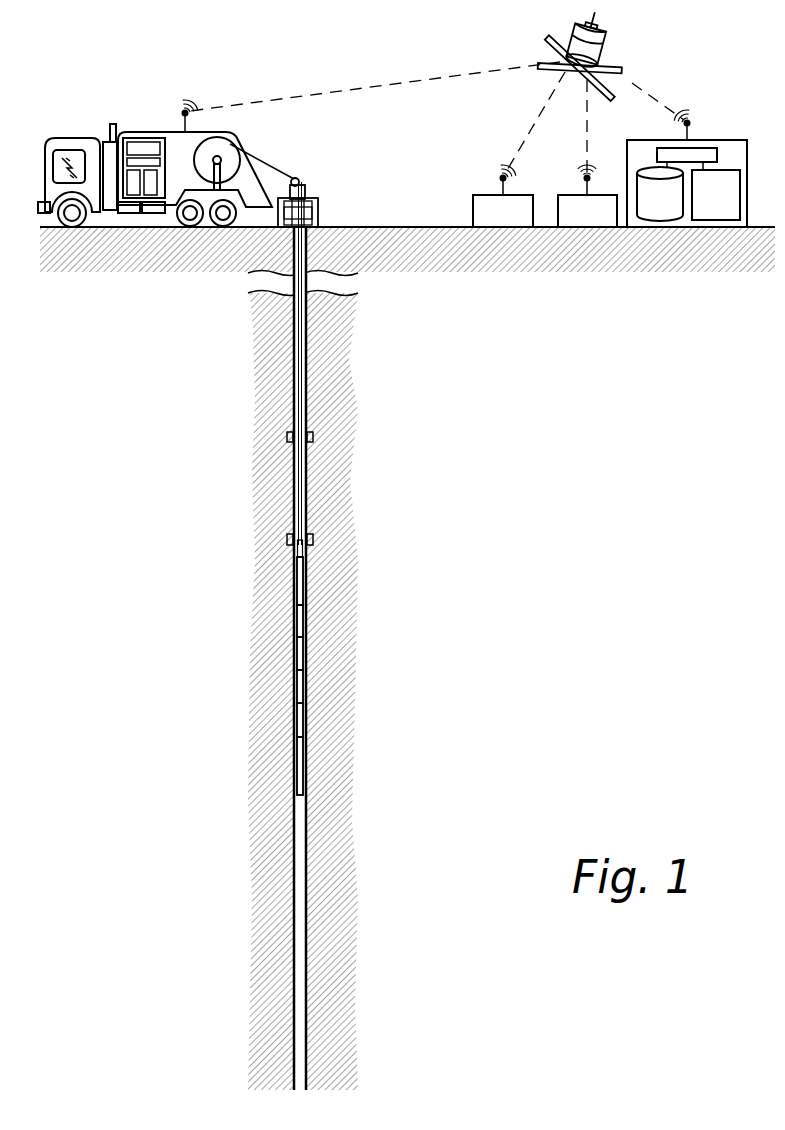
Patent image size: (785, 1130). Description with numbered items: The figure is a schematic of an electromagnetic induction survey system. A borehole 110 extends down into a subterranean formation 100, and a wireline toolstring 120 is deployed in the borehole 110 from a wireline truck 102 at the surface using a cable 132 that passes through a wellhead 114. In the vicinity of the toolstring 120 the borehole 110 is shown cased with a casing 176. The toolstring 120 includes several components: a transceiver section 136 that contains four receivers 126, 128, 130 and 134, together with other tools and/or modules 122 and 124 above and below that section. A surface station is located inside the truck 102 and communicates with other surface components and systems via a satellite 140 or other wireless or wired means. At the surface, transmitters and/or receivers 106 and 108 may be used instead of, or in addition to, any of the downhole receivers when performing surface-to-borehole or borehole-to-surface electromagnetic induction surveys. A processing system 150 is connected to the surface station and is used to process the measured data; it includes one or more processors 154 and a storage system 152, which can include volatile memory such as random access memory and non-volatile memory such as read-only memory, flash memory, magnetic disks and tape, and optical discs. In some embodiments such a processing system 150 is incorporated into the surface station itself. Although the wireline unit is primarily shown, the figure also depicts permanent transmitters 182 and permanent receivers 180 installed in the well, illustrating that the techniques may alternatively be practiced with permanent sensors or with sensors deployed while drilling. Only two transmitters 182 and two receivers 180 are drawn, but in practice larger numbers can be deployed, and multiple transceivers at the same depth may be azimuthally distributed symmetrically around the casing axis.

The subterranean formation 100 is at (565, 527).
The wireline truck 102 is at (135, 132).
The surface transmitter and/or receiver 106 is at (473, 205).
The surface transmitter and/or receiver 108 is at (566, 195).
The borehole 110 is at (302, 376).
The wellhead 114 is at (312, 190).
The wireline toolstring 120 is at (163, 547).
The tool and/or module 122 is at (303, 586).
The tool and/or module 124 is at (303, 770).
The receiver 126 is at (303, 620).
The receiver 128 is at (303, 665).
The receiver 130 is at (303, 690).
The cable 132 is at (296, 177).
The receiver 134 is at (303, 728).
The transceiver section 136 is at (425, 607).
The satellite 140 is at (617, 45).
The processing system 150 is at (760, 125).
The storage system 152 is at (678, 215).
The processor 154 is at (735, 206).
The casing 176 is at (307, 840).
The permanent receiver 180 is at (285, 538).
The permanent transmitter 182 is at (285, 441).